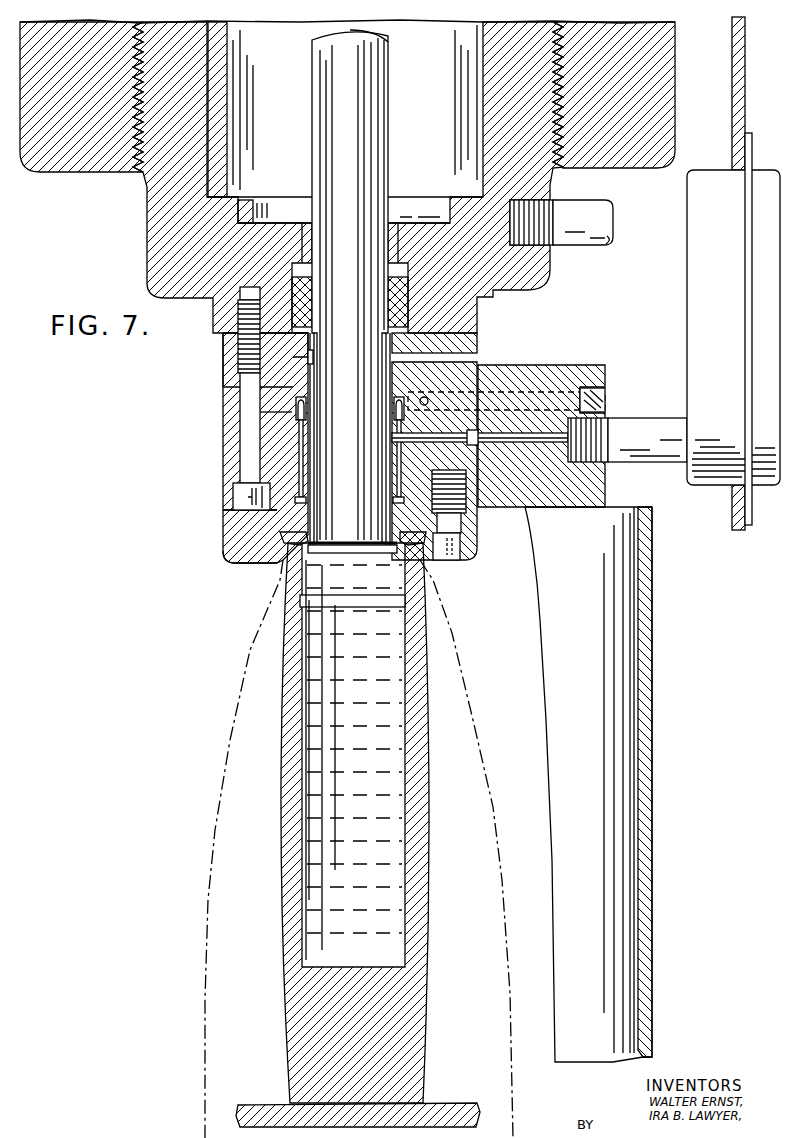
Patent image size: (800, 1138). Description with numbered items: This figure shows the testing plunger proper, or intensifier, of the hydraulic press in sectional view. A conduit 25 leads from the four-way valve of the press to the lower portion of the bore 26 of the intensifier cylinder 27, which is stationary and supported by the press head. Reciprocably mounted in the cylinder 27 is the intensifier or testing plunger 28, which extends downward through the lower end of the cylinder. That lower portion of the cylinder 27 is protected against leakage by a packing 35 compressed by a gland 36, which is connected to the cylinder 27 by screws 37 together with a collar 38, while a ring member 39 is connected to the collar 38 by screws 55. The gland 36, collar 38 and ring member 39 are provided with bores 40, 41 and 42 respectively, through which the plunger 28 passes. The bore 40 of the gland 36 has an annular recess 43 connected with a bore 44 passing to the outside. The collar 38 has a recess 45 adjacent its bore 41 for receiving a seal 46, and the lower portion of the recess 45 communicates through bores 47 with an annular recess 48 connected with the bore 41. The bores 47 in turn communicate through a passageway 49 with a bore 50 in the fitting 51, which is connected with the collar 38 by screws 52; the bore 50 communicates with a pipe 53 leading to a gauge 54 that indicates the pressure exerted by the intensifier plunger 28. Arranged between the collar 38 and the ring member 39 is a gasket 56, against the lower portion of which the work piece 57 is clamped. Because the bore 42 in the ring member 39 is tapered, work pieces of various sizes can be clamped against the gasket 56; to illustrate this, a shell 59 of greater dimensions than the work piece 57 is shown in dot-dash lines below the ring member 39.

The conduit 25 is at (588, 219).
The bore 26 is at (253, 183).
The intensifier cylinder 27 is at (97, 170).
The intensifier or testing plunger 28 is at (374, 133).
The packing 35 is at (312, 302).
The gland 36 is at (223, 363).
The screws 37 is at (238, 317).
The collar 38 is at (223, 443).
The ring member 39 is at (225, 547).
The bore 40 is at (313, 337).
The bore 41 is at (316, 449).
The bore 42 is at (430, 563).
The annular recess 43 is at (314, 366).
The bore 44 is at (466, 358).
The recess 45 is at (292, 415).
The seal 46 is at (308, 417).
The bores 47 is at (308, 479).
The annular recess 48 is at (306, 500).
The passageway 49 is at (394, 441).
The bore 50 is at (527, 441).
The fitting 51 is at (560, 372).
The screws 52 is at (603, 389).
The pipe 53 is at (653, 427).
The gauge 54 is at (728, 314).
The screws 55 is at (460, 563).
The gasket 56 is at (283, 540).
The work piece 57 is at (285, 798).
The shell 59 is at (234, 716).